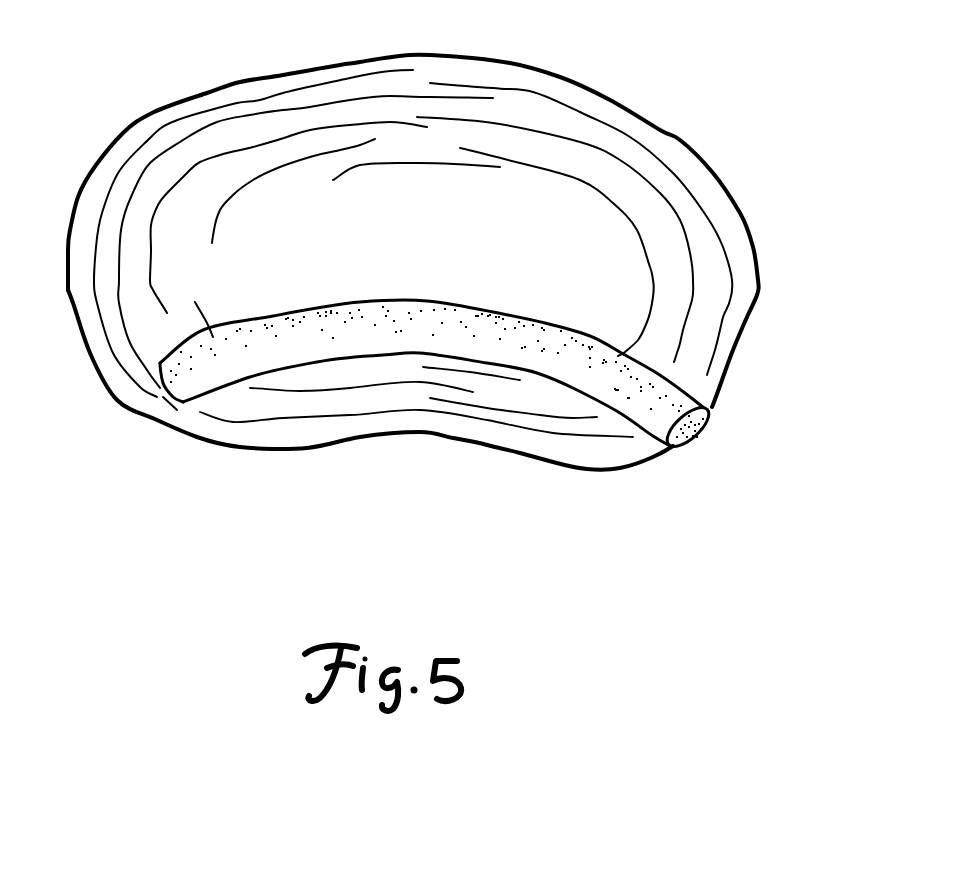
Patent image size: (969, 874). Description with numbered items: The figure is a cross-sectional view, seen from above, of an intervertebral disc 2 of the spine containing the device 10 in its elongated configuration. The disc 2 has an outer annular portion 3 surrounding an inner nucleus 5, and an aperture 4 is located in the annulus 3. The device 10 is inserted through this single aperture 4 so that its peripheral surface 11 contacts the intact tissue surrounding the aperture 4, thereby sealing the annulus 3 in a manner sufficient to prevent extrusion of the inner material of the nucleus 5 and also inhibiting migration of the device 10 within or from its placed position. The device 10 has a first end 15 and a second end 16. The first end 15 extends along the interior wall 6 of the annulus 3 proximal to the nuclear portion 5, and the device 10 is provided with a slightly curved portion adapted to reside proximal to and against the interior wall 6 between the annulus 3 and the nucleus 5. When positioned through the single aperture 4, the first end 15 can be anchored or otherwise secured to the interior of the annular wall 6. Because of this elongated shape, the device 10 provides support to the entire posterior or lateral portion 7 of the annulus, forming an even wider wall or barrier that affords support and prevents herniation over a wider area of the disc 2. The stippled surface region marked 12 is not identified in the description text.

The intervertebral disc 2 is at (622, 98).
The annular portion 3 is at (670, 177).
The aperture 4 is at (703, 410).
The nucleus 5 is at (540, 233).
The interior wall 6 is at (380, 363).
The posterior or lateral portion 7 is at (233, 577).
The device 10 is at (623, 420).
The peripheral surface 11 is at (573, 387).
The porous surface 12 is at (317, 340).
The first end 15 is at (175, 385).
The second end 16 is at (690, 446).